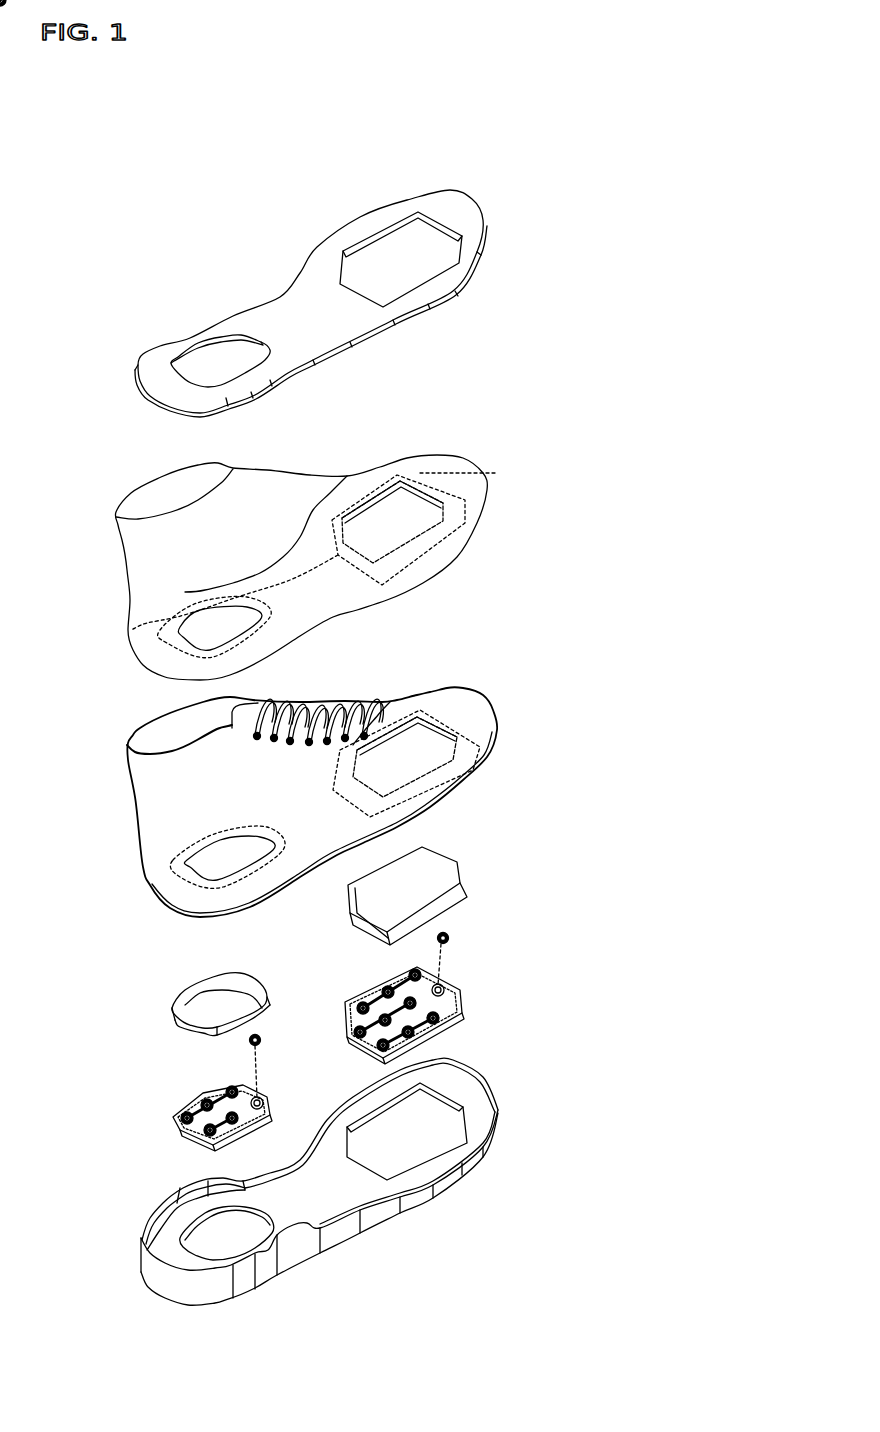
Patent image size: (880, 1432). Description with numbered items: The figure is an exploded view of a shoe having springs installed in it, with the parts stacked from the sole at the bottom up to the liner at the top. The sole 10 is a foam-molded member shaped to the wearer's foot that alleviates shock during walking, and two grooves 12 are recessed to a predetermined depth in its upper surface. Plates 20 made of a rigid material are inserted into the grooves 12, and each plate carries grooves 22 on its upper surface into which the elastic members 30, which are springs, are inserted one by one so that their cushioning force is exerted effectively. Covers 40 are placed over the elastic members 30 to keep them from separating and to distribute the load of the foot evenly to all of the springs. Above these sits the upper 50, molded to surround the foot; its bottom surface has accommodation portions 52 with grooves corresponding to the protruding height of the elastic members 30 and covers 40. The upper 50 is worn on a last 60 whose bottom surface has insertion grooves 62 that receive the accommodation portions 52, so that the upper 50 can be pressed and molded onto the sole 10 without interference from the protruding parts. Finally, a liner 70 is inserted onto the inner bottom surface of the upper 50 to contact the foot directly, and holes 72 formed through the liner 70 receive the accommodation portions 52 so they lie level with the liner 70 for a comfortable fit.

The sole 10 is at (410, 1203).
The grooves 12 is at (430, 1112).
The plates 20 is at (473, 1018).
The grooves 22 is at (457, 980).
The elastic members 30 is at (447, 935).
The covers 40 is at (420, 873).
The upper 50 is at (158, 792).
The accommodation portions 52 is at (440, 740).
The last 60 is at (147, 540).
The insertion grooves 62 is at (413, 502).
The liner 70 is at (312, 288).
The holes 72 is at (430, 248).